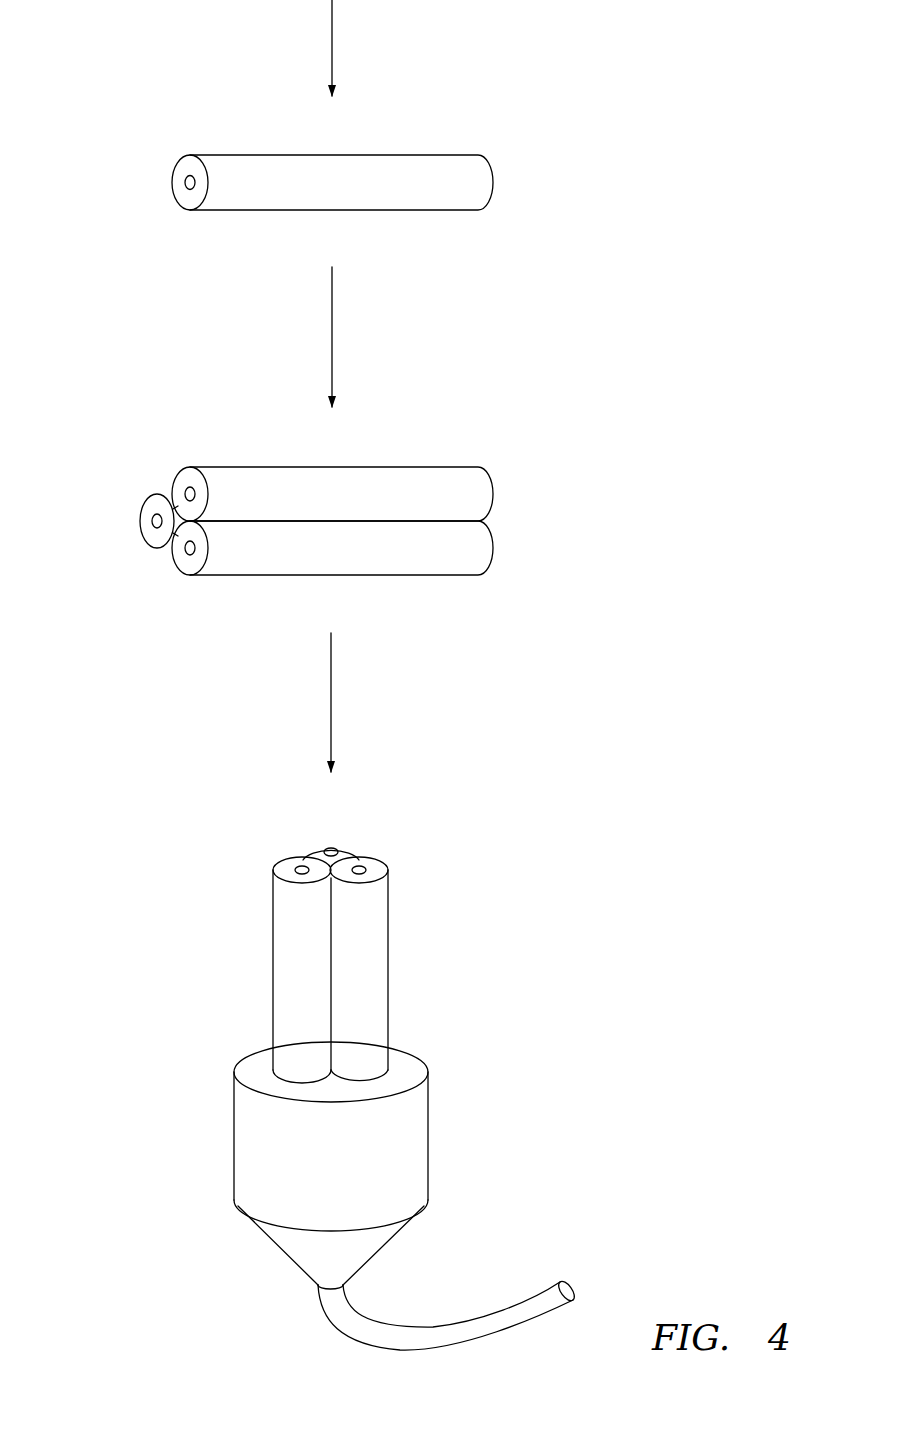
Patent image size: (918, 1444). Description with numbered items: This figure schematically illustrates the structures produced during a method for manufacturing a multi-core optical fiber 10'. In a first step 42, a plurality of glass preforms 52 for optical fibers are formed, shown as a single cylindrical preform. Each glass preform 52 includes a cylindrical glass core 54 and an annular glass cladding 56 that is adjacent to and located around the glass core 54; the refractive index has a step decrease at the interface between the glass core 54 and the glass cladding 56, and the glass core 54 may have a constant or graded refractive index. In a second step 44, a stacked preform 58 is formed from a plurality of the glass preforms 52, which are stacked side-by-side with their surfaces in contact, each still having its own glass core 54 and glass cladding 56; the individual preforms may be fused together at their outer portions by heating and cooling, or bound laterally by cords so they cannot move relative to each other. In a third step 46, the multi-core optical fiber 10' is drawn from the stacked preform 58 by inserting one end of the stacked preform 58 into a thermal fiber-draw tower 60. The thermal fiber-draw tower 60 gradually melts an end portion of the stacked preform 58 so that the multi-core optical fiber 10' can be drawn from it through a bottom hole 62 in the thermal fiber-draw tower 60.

The step of forming glass preforms 42 is at (332, 40).
The step of forming stacked preform 44 is at (332, 332).
The step of drawing multi-core optical fiber 46 is at (331, 698).
The glass preform 52 is at (512, 183).
The glass core 54 is at (185, 181).
The glass cladding 56 is at (191, 162).
The stacked preform 58 is at (507, 523).
The thermal fiber-draw tower 60 is at (344, 1157).
The bottom hole 62 is at (300, 1286).
The multi-core optical fiber 10' is at (446, 1299).